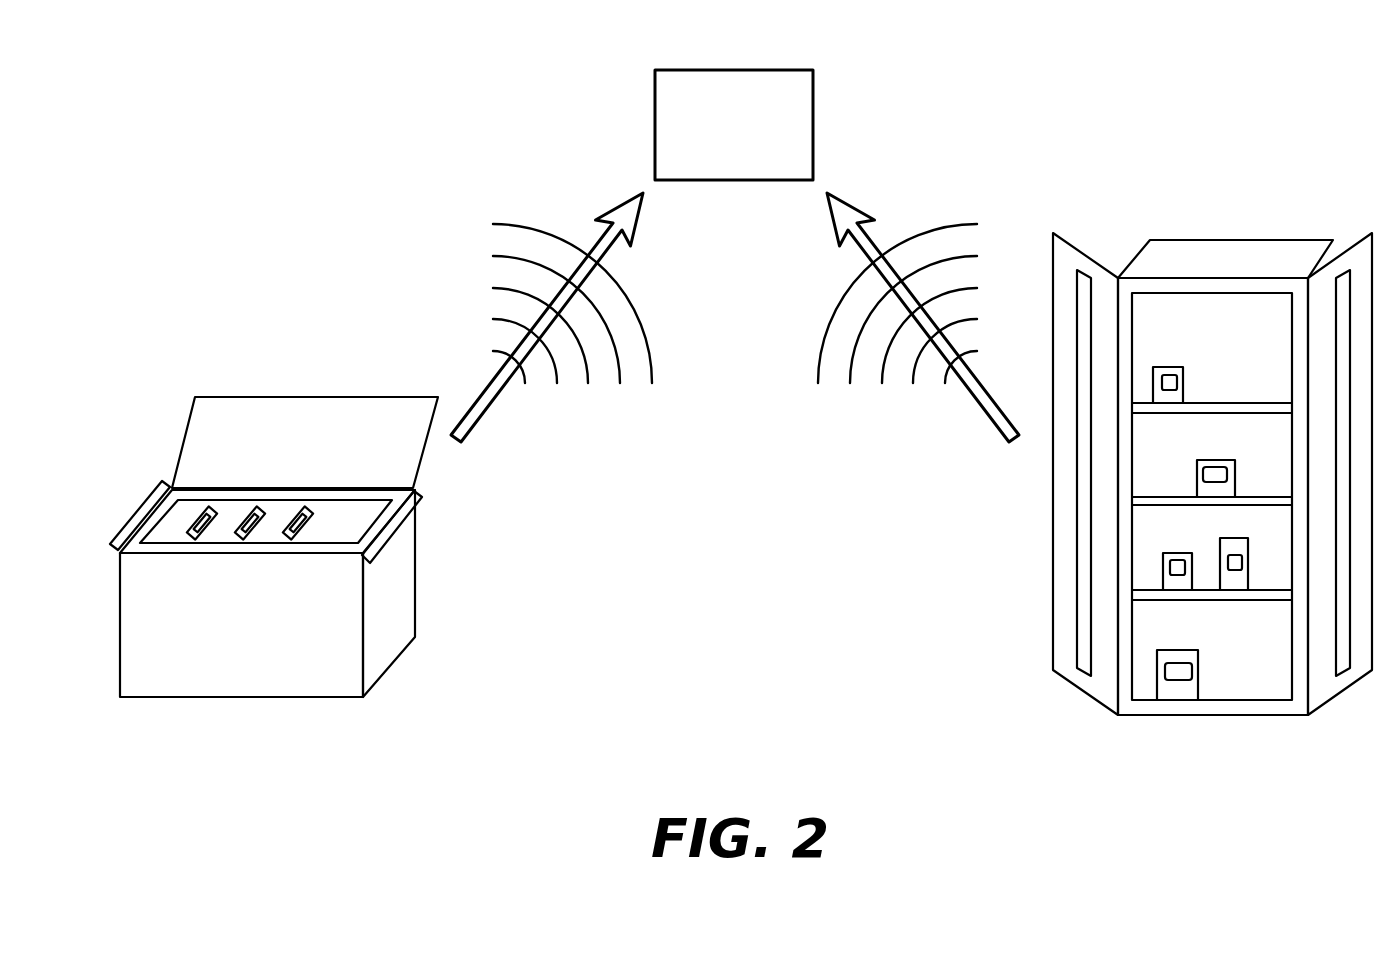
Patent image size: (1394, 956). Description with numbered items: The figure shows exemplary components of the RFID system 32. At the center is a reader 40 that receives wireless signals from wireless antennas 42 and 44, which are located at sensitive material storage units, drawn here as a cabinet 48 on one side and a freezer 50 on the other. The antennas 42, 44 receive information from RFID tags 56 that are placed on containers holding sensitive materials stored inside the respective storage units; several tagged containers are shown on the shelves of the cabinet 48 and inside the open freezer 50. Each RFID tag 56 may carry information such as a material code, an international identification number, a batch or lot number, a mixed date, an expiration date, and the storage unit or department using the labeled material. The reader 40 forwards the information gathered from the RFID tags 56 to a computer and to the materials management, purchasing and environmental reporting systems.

The RFID system 32 is at (220, 197).
The reader 40 is at (693, 70).
The wireless antenna 42 is at (1090, 272).
The wireless antenna 44 is at (133, 517).
The cabinet 48 is at (1287, 710).
The freezer 50 is at (217, 683).
The RFID tag 56 is at (198, 516).